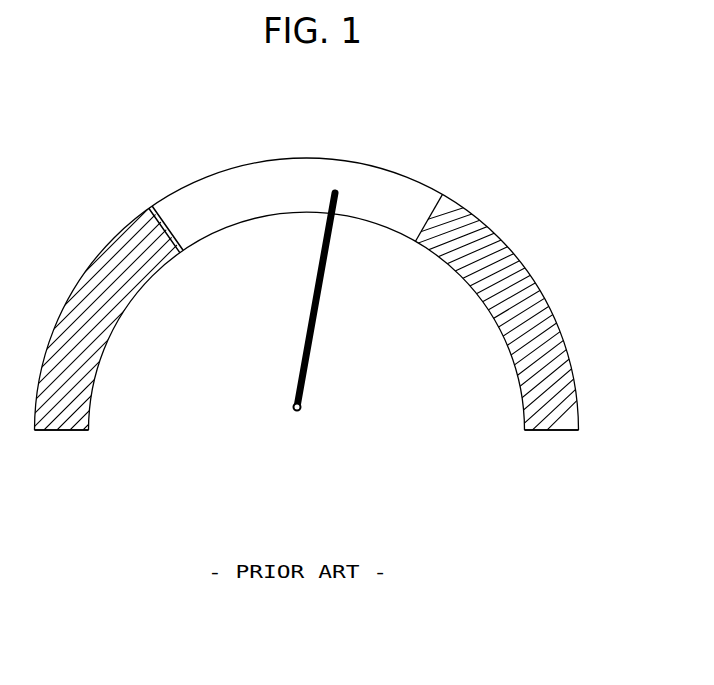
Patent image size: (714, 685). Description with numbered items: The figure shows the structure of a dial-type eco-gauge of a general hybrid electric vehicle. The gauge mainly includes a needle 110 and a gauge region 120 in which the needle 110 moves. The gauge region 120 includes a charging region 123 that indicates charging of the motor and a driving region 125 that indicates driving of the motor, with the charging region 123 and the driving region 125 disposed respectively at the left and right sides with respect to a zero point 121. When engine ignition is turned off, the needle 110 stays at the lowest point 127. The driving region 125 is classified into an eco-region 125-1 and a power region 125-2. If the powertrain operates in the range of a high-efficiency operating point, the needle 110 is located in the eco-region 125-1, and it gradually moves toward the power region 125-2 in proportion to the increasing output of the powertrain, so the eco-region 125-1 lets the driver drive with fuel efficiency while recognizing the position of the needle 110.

The needle 110 is at (313, 287).
The gauge region 120 is at (415, 478).
The zero point 121 is at (184, 252).
The charging region 123 is at (92, 380).
The driving region 125 is at (450, 431).
The eco-region 125-1 is at (377, 210).
The power region 125-2 is at (493, 285).
The lowest point 127 is at (65, 432).